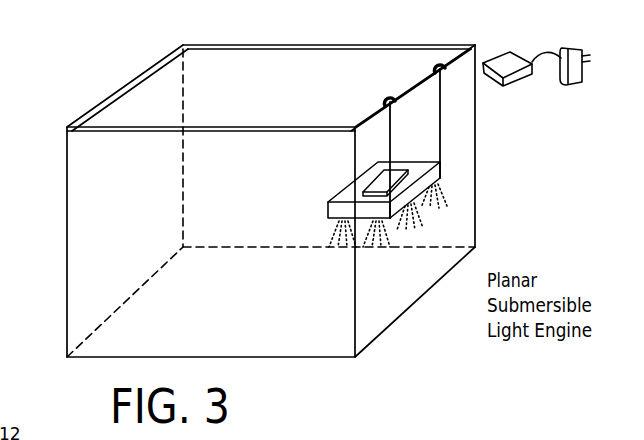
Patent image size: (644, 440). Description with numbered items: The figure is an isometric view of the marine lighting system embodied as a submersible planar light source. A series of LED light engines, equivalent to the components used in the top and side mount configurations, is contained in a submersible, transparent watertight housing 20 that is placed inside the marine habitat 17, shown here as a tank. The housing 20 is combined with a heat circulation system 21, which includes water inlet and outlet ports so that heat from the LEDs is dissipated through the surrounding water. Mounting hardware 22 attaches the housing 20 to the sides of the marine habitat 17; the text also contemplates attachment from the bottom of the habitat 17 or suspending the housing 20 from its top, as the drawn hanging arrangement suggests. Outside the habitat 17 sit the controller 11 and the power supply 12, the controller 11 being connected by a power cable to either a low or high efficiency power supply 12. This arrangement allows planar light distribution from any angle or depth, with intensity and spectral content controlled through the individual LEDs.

The controller 11 is at (513, 68).
The power supply 12 is at (576, 77).
The marine habitat 17 is at (293, 327).
The submersible transparent watertight housing 20 is at (388, 153).
The heat circulation system 21 is at (363, 193).
The mounting hardware 22 is at (440, 104).